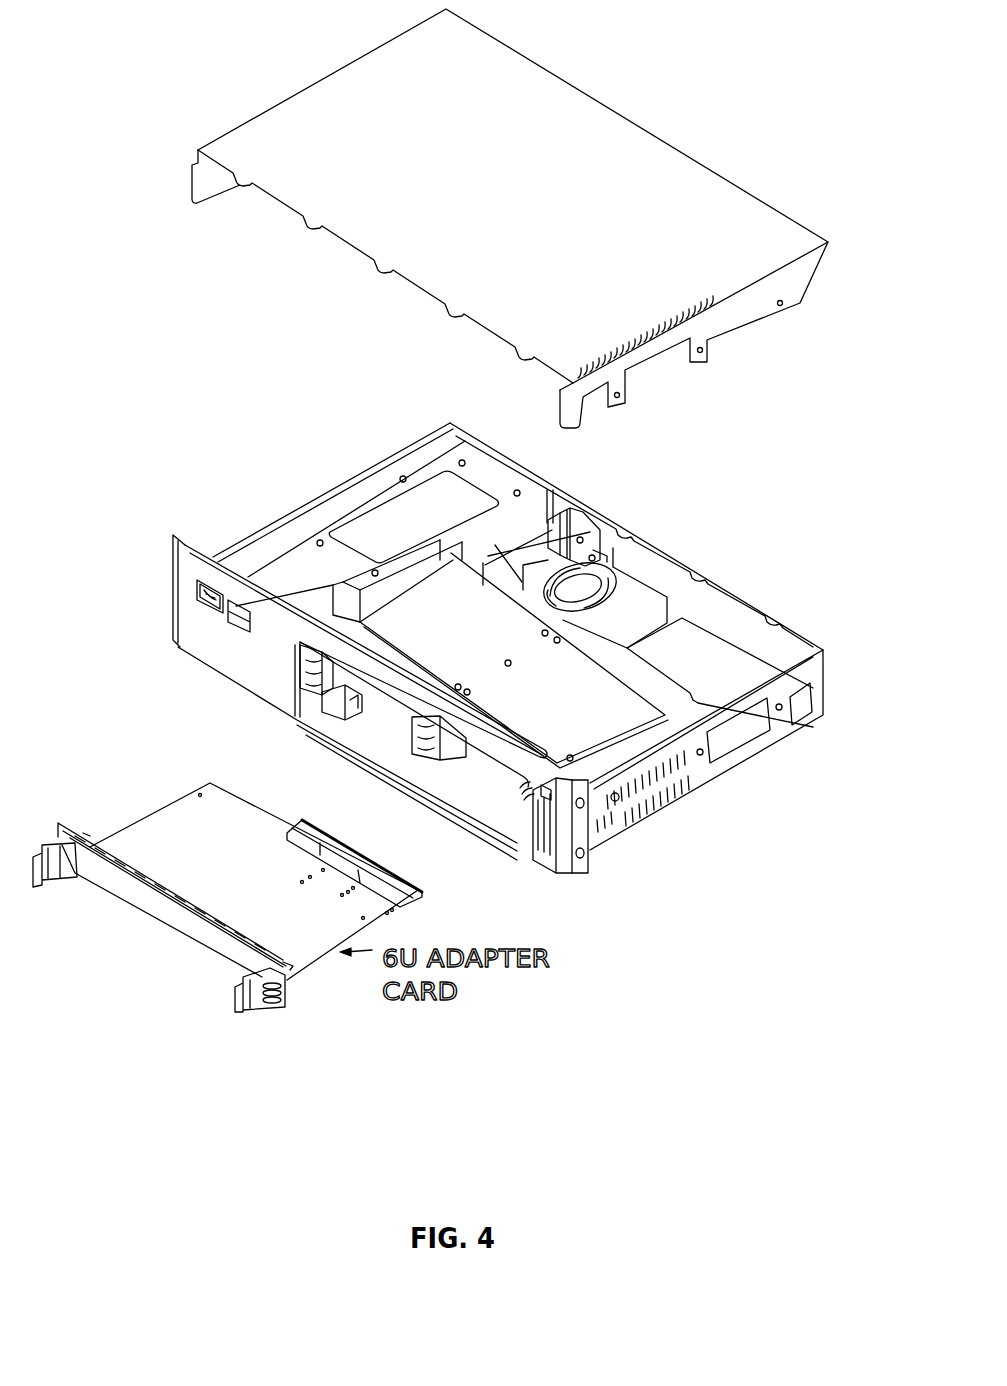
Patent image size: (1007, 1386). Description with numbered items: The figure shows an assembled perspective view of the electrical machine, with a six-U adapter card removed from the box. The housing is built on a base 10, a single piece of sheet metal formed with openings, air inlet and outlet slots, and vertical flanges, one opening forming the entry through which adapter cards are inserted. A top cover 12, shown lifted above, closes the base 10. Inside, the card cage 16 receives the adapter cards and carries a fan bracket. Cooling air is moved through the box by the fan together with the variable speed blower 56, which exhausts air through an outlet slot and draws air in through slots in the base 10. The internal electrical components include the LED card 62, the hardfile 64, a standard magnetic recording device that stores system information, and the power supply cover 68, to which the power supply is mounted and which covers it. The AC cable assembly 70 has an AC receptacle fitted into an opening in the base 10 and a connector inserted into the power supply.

The base 10 is at (221, 672).
The top cover 12 is at (803, 217).
The card cage 16 is at (514, 660).
The variable speed blower 56 is at (608, 637).
The LED card 62 is at (596, 533).
The hardfile 64 is at (720, 672).
The power supply cover 68 is at (401, 522).
The AC cable assembly 70 is at (203, 600).